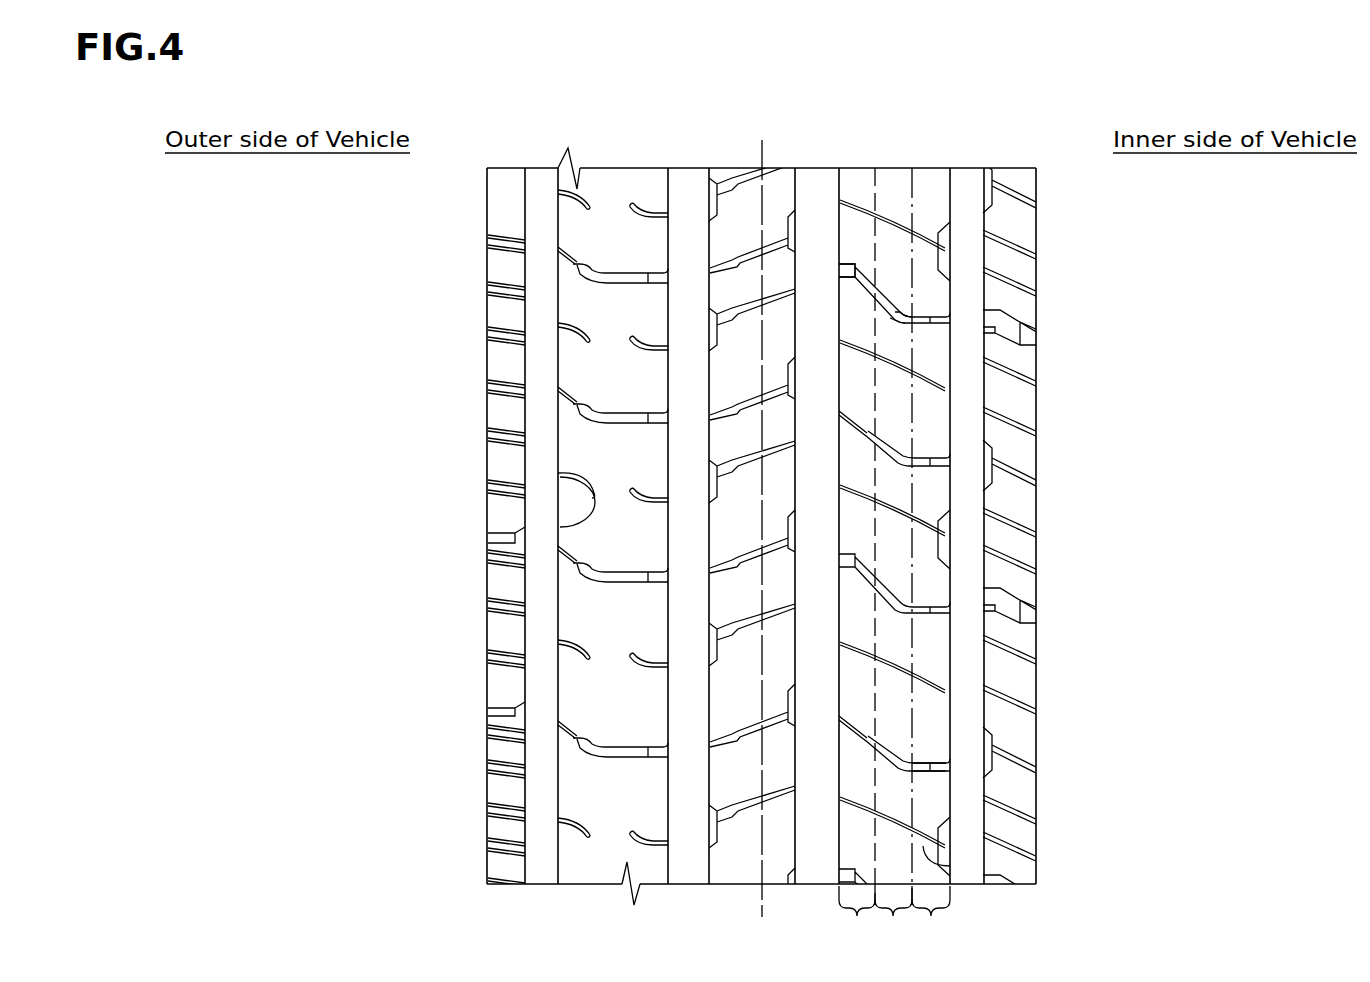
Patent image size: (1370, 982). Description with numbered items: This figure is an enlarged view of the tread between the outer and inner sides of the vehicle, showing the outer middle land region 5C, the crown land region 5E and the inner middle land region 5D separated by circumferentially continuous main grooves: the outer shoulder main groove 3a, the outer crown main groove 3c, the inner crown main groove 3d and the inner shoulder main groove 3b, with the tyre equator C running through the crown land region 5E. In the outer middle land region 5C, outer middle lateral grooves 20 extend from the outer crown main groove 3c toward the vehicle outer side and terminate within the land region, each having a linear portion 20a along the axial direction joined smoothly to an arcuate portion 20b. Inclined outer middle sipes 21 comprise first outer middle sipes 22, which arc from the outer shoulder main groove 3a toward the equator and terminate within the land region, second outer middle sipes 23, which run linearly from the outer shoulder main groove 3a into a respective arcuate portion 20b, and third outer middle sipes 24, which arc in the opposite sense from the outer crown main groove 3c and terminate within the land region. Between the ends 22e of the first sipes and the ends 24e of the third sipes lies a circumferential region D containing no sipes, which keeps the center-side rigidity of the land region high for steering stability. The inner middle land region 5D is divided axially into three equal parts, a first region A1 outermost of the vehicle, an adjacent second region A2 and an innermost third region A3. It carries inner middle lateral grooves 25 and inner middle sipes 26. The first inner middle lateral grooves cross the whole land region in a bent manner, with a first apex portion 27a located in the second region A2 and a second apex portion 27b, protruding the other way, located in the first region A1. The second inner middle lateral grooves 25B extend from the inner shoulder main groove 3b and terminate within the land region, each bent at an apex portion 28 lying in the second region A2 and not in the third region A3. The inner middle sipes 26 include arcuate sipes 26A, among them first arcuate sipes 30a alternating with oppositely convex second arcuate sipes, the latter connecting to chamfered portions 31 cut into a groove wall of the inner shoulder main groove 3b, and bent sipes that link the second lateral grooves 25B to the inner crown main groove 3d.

The outer shoulder main groove 3a is at (542, 202).
The inner shoulder main groove 3b is at (965, 210).
The outer crown main groove 3c is at (687, 200).
The inner crown main groove 3d is at (817, 202).
The outer middle land region 5C is at (495, 472).
The inner middle land region 5D is at (1028, 513).
The crown land region 5E is at (778, 200).
The tyre equator C is at (761, 514).
The region where no sipes are arranged D is at (605, 842).
The outer middle lateral groove 20 is at (495, 510).
The linear portion 20a is at (633, 278).
The arcuate portion 20b is at (578, 273).
The outer middle sipe 21 is at (470, 513).
The first outer middle sipe 22 is at (578, 200).
The one end of first outer middle sipe 22e is at (590, 523).
The second outer middle sipe 23 is at (560, 400).
The third outer middle sipe 24 is at (653, 202).
The one end of third outer middle sipe 24e is at (638, 490).
The inner middle lateral groove 25 is at (1019, 576).
The second inner middle lateral groove 25B is at (940, 458).
The inner middle sipe 26 is at (1019, 716).
The arcuate sipe 26A is at (940, 864).
The first apex portion 27a is at (900, 318).
The second apex portion 27b is at (858, 267).
The apex portion 28 is at (900, 762).
The first arcuate sipe 30a is at (893, 657).
The chamfered portion 31 is at (945, 838).
The first region A1 is at (851, 558).
The second region A2 is at (895, 558).
The third region A3 is at (938, 917).